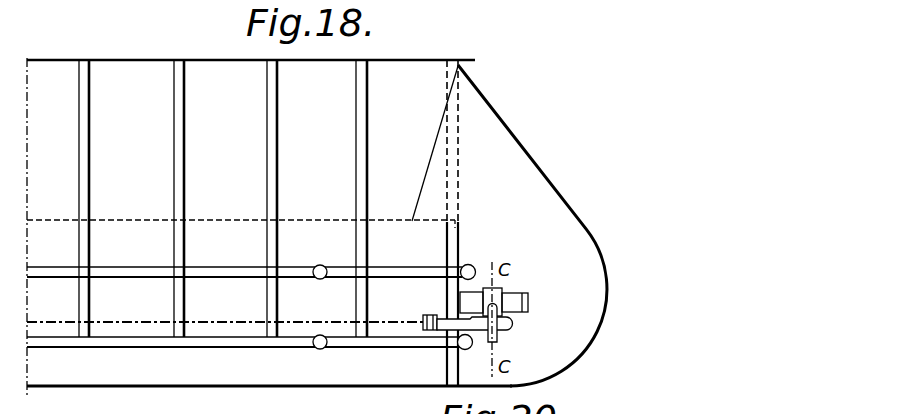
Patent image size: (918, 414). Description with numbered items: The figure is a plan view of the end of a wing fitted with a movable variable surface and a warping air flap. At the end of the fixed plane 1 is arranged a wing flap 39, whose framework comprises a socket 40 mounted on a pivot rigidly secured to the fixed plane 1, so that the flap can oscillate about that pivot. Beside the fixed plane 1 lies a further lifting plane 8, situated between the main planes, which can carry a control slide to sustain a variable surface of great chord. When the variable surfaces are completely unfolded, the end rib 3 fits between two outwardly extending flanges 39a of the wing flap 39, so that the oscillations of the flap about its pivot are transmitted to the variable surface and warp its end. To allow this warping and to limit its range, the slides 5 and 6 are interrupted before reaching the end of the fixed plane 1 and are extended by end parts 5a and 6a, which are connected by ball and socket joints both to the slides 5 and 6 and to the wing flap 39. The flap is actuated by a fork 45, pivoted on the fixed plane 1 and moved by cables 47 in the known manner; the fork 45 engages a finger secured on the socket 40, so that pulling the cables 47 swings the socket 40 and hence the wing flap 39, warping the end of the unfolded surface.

The fixed plane 1 is at (228, 368).
The end rib 3 is at (268, 133).
The slide 5 is at (229, 337).
The end part 5a is at (398, 343).
The slide 6 is at (205, 266).
The end part 6a is at (385, 271).
The lifting plane 8 is at (455, 165).
The wing flap 39 is at (544, 217).
The outwardly extending flanges 39a is at (434, 147).
The socket 40 is at (512, 302).
The fork 45 is at (482, 334).
The cables 47 is at (382, 322).